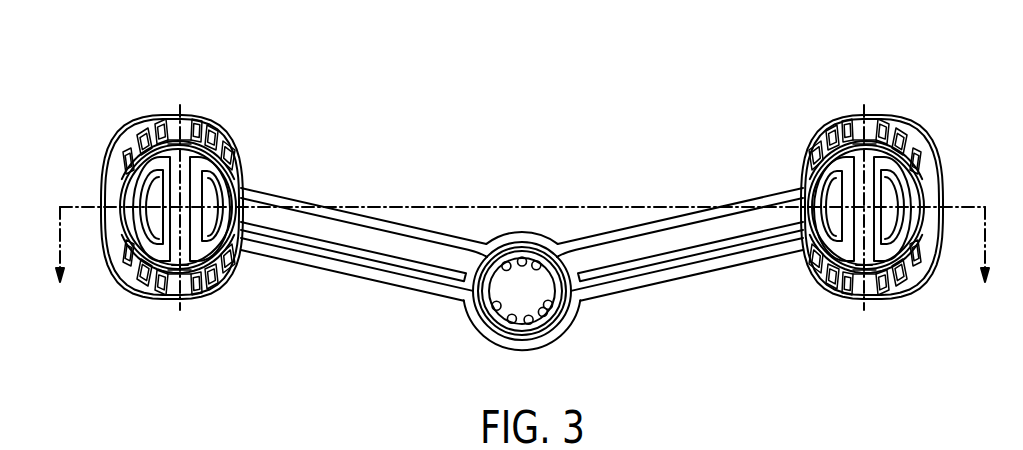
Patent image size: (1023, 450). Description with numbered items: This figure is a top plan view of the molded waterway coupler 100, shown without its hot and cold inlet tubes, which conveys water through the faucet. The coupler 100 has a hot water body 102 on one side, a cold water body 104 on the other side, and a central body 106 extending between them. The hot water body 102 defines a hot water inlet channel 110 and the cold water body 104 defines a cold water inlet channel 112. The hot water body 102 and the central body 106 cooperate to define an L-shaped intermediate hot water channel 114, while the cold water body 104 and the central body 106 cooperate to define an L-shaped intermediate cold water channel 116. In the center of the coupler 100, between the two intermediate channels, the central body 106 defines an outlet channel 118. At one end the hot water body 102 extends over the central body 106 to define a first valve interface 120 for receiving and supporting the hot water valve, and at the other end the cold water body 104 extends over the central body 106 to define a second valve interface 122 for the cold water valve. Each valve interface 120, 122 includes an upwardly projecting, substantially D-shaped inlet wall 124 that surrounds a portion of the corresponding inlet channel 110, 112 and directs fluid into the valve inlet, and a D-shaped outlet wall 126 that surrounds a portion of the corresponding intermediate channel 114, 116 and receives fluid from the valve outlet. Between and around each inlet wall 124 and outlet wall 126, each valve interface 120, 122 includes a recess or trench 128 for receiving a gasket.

The coupler 100 is at (528, 228).
The hot water body 102 is at (125, 155).
The cold water body 104 is at (923, 170).
The central body 106 is at (440, 295).
The hot water inlet channel 110 is at (147, 222).
The cold water inlet channel 112 is at (897, 222).
The intermediate hot water channel 114 is at (215, 229).
The intermediate cold water channel 116 is at (829, 229).
The outlet channel 118 is at (520, 272).
The first valve interface 120 is at (177, 262).
The second valve interface 122 is at (867, 262).
The inlet wall 124 is at (165, 167).
The outlet wall 126 is at (220, 180).
The recess or trench 128 is at (192, 148).